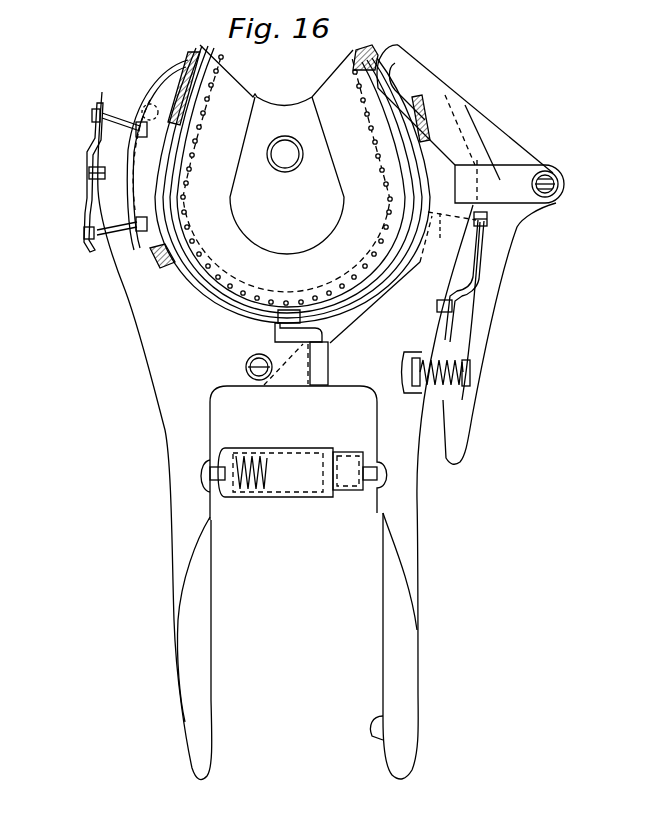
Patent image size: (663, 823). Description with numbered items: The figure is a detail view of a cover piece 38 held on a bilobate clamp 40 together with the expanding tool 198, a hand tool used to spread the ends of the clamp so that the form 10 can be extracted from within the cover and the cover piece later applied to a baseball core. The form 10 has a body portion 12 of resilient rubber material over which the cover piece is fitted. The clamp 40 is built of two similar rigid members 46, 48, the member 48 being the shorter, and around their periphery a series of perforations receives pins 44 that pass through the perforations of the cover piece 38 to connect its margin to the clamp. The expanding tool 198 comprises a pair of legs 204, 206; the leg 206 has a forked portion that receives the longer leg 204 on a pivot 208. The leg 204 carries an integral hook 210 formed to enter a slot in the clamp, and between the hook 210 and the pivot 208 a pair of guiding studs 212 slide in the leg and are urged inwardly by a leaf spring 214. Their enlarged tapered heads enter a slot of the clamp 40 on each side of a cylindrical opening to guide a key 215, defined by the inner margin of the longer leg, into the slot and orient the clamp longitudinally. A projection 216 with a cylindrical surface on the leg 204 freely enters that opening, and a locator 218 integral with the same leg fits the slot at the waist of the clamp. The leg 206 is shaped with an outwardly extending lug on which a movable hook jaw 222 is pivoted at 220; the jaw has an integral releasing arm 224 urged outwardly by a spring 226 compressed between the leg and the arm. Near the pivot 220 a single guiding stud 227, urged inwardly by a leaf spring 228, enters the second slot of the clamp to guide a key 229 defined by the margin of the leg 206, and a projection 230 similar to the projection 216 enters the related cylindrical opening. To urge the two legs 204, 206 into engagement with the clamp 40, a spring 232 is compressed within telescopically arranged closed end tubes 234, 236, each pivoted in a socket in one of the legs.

The form 10 is at (246, 82).
The body portion 12 is at (293, 218).
The cover piece 38 is at (219, 55).
The bilobate clamp 40 is at (370, 44).
The pins 44 is at (367, 110).
The rigid member 46 is at (373, 289).
The rigid member 48 is at (210, 287).
The expanding tool 198 is at (435, 485).
The leg 204 is at (211, 598).
The leg 206 is at (383, 617).
The pivot 208 is at (259, 381).
The hook 210 is at (188, 60).
The guiding studs 212 is at (110, 110).
The leaf spring 214 is at (90, 142).
The key 215 is at (160, 100).
The projection 216 is at (132, 200).
The locator 218 is at (320, 327).
The pivot 220 is at (557, 189).
The hook jaw 222 is at (447, 81).
The releasing arm 224 is at (480, 350).
The spring 226 is at (450, 360).
The guiding stud 227 is at (489, 222).
The leaf spring 228 is at (482, 250).
The key 229 is at (416, 105).
The projection 230 is at (403, 277).
The spring 232 is at (249, 498).
The closed end tube 234 is at (287, 447).
The closed end tube 236 is at (352, 448).